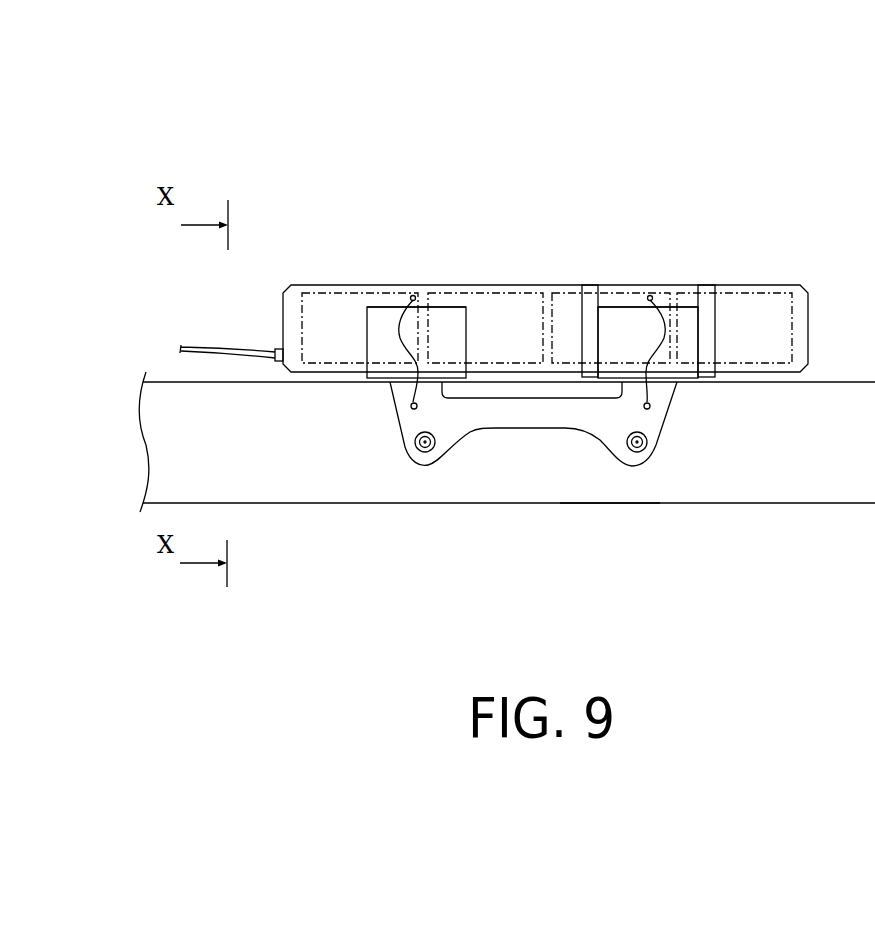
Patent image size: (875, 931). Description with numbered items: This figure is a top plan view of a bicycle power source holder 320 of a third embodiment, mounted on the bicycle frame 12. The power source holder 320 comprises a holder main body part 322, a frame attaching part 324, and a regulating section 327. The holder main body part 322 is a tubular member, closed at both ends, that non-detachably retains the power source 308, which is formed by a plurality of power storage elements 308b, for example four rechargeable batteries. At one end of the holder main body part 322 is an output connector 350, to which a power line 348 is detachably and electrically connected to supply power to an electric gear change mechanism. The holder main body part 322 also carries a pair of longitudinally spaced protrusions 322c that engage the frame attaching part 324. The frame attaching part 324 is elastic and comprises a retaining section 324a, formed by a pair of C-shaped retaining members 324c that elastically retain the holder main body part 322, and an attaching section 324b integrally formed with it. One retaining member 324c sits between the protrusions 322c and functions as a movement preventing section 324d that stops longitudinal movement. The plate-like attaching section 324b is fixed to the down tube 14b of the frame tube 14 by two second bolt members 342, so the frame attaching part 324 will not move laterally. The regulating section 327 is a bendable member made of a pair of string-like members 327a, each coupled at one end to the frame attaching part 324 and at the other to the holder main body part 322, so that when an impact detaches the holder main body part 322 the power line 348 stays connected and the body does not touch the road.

The frame 12 is at (390, 526).
The frame tube 14 is at (813, 513).
The down tube 14b is at (605, 495).
The power source 308 is at (752, 286).
The power storage elements 308b is at (352, 285).
The power source holder 320 is at (647, 268).
The holder main body part 322 is at (522, 268).
The protrusions 322c is at (588, 285).
The frame attaching part 324 is at (671, 455).
The retaining section 324a is at (448, 318).
The attaching section 324b is at (520, 434).
The retaining members 324c is at (466, 305).
The movement preventing section 324d is at (628, 325).
The regulating section 327 is at (660, 356).
The string-like members 327a is at (408, 403).
The second bolt members 342 is at (425, 455).
The power line 348 is at (236, 336).
The output connector 350 is at (281, 340).